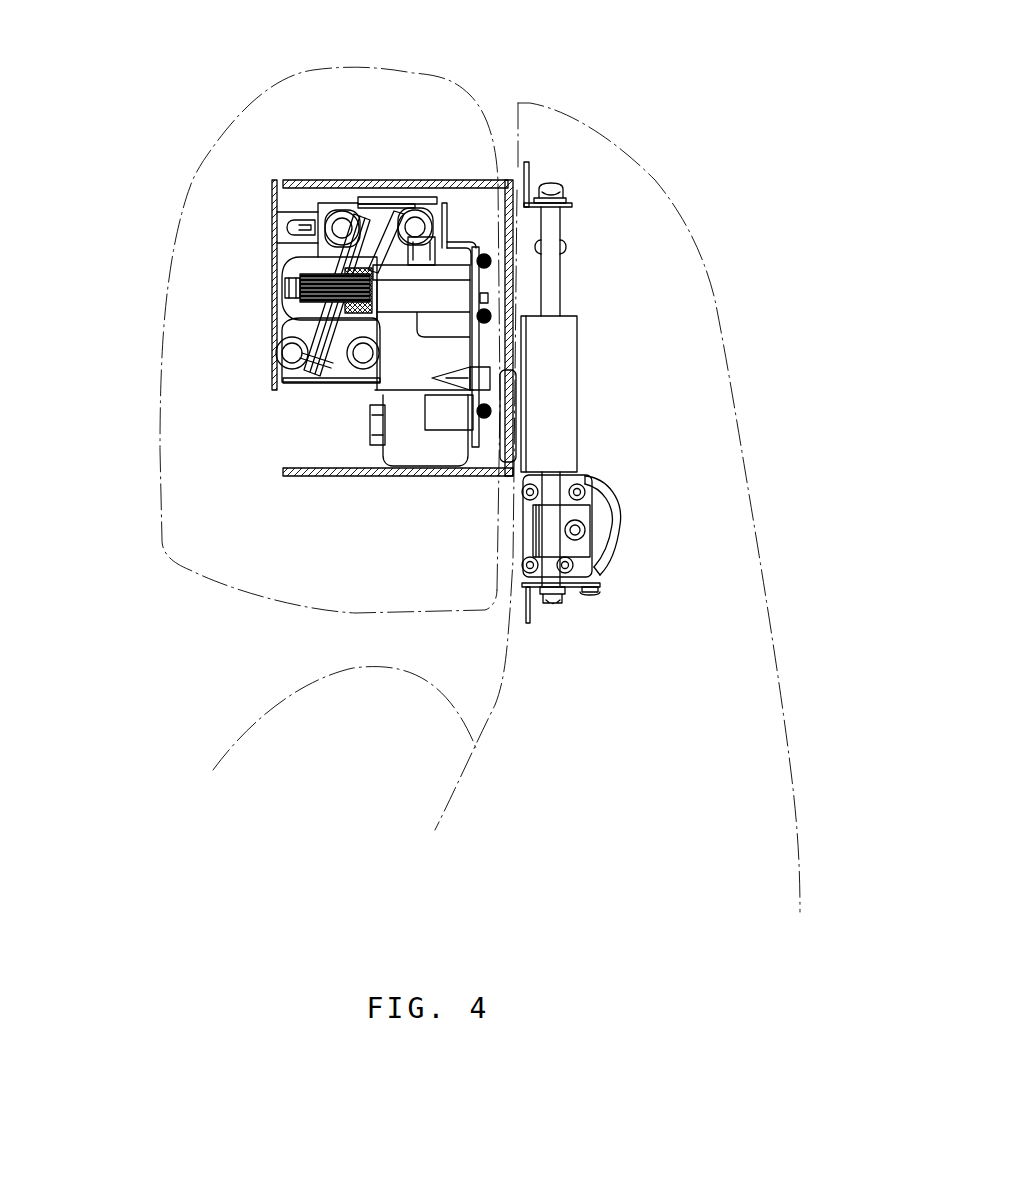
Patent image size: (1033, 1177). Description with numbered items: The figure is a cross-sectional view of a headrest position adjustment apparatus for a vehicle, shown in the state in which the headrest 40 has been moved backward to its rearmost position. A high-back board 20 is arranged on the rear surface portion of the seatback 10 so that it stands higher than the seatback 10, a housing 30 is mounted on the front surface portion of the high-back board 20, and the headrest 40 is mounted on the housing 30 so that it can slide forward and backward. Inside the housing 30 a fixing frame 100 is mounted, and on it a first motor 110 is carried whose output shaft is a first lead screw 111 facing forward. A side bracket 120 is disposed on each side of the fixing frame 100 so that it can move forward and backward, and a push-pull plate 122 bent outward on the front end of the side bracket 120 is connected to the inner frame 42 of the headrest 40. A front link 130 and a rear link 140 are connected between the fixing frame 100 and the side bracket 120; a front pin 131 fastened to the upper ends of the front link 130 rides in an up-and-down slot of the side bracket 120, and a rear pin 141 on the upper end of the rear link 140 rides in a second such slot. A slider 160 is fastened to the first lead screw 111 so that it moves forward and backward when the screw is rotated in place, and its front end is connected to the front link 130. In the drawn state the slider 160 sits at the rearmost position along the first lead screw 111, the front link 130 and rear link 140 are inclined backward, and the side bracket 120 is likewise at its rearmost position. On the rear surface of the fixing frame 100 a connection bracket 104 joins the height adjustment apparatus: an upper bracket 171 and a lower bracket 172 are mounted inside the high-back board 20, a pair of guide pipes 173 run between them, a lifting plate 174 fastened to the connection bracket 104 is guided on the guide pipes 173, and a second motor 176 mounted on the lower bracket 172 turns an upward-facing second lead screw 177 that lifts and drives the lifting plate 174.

The seatback 10 is at (254, 726).
The high-back board 20 is at (613, 140).
The housing 30 is at (284, 181).
The headrest 40 is at (173, 276).
The inner frame 42 is at (272, 221).
The fixing frame 100 is at (445, 233).
The connection bracket 104 is at (512, 352).
The first motor 110 is at (437, 314).
The first lead screw 111 is at (300, 318).
The side bracket 120 is at (383, 206).
The push-pull plate 122 is at (297, 181).
The front link 130 is at (342, 198).
The front pin 131 is at (298, 248).
The rear link 140 is at (414, 198).
The rear pin 141 is at (430, 230).
The slider 160 is at (337, 355).
The upper bracket 171 is at (572, 201).
The lower bracket 172 is at (528, 618).
The guide pipes 173 is at (553, 298).
The lifting plate 174 is at (565, 438).
The second motor 176 is at (580, 512).
The second lead screw 177 is at (566, 245).